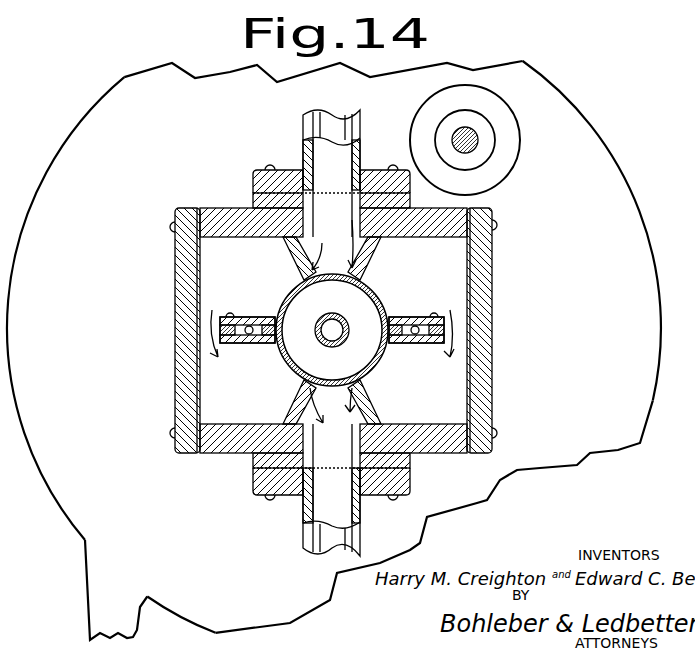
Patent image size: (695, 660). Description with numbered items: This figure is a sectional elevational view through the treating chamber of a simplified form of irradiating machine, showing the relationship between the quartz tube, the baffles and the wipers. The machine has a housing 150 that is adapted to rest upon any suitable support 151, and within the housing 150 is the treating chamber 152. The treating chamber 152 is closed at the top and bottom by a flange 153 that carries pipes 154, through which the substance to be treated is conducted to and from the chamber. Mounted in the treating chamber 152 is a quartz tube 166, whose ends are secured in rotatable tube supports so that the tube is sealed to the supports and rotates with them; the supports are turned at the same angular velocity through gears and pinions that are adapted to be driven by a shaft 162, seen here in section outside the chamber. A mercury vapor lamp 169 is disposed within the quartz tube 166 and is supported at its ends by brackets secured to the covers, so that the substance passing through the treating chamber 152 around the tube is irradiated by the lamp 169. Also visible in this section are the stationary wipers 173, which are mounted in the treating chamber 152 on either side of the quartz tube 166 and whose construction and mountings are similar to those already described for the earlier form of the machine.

The housing 150 is at (600, 153).
The support 151 is at (97, 586).
The treating chamber 152 is at (332, 338).
The flange 153 is at (258, 178).
The pipe 154 is at (303, 122).
The shaft 162 is at (478, 137).
The quartz tube 166 is at (380, 370).
The mercury vapor lamp 169 is at (322, 347).
The stationary wiper 173 is at (390, 317).